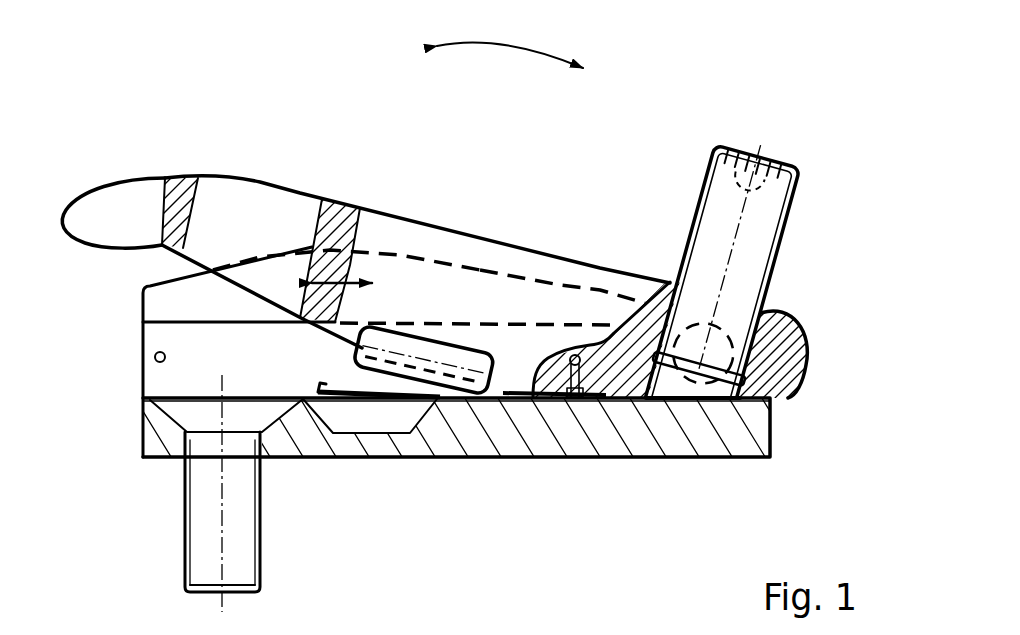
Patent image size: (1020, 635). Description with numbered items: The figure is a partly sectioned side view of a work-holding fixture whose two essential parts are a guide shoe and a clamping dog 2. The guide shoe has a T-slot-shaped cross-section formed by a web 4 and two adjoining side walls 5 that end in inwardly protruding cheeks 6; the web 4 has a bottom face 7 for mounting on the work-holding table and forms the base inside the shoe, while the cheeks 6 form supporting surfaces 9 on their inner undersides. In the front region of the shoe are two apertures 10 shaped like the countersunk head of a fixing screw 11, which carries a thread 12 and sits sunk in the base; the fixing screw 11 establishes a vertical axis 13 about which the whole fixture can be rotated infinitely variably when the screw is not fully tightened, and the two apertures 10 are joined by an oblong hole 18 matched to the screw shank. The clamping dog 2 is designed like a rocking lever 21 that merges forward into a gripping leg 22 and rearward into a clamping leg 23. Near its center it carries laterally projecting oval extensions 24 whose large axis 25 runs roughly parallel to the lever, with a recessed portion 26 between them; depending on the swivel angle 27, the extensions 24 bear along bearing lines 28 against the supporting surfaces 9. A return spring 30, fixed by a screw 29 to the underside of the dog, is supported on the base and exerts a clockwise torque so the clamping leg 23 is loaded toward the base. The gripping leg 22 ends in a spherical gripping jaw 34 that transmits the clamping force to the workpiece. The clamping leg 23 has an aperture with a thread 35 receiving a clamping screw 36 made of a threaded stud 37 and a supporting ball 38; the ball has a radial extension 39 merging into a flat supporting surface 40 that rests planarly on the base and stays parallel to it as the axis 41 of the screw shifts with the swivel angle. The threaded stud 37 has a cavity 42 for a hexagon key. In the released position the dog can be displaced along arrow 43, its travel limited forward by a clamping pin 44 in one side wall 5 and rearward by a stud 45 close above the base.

The clamping dog 2 is at (392, 212).
The web 4 is at (637, 437).
The side walls 5 is at (322, 398).
The cheeks 6 is at (215, 305).
The bottom face 7 is at (610, 405).
The supporting surfaces 9 is at (242, 320).
The apertures 10 is at (180, 412).
The fixing screw 11 is at (203, 508).
The thread 12 is at (255, 563).
The vertical axis 13 is at (220, 490).
The oblong hole 18 is at (280, 370).
The rocking lever 21 is at (425, 278).
The gripping leg 22 is at (217, 212).
The clamping leg 23 is at (560, 307).
The extensions 24 is at (452, 353).
The large axis 25 is at (474, 366).
The recessed portion 26 is at (413, 420).
The swivel angle 27 is at (524, 45).
The bearing lines 28 is at (365, 343).
The screw 29 is at (555, 400).
The return spring 30 is at (352, 395).
The gripping jaw 34 is at (104, 243).
The thread 35 is at (662, 400).
The clamping screw 36 is at (795, 242).
The threaded stud 37 is at (757, 235).
The supporting ball 38 is at (790, 318).
The extension 39 is at (733, 410).
The supporting surface 40 is at (705, 420).
The axis 41 is at (728, 268).
The cavity 42 is at (767, 187).
The arrow 43 is at (353, 283).
The clamping pin 44 is at (155, 357).
The stud 45 is at (798, 383).